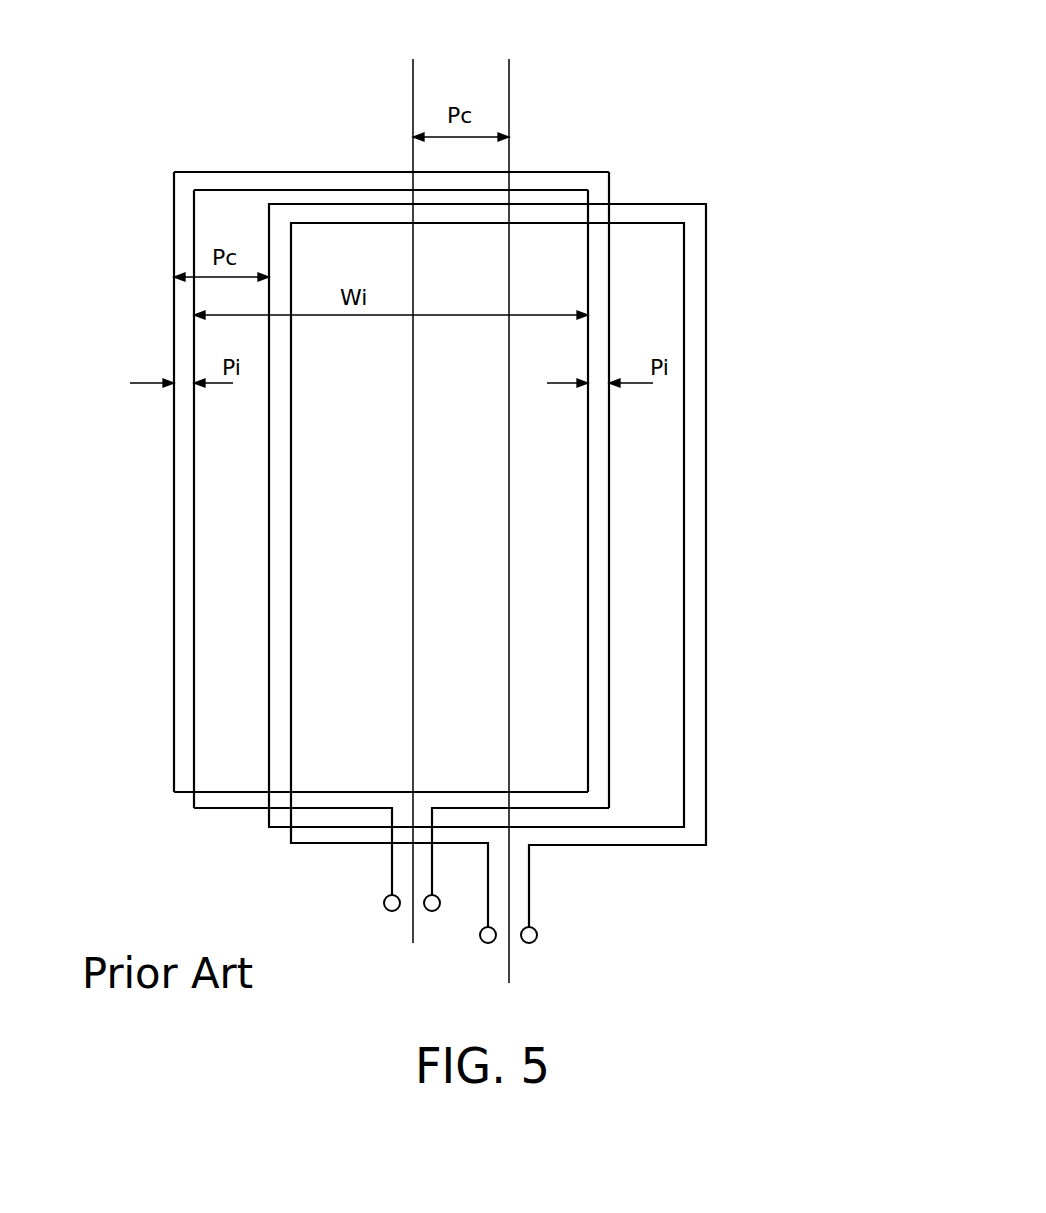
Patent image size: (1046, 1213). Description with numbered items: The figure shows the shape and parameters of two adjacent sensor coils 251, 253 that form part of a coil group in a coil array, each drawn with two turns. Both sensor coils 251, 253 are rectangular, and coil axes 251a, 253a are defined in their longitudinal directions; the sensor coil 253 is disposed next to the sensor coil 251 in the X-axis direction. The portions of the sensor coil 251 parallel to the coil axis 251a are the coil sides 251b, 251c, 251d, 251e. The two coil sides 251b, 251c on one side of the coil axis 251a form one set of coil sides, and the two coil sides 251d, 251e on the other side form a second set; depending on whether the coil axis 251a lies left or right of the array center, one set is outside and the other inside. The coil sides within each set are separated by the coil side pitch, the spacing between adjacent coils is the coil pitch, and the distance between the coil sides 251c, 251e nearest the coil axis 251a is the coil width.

The sensor coil 251 is at (430, 493).
The sensor coil 253 is at (667, 174).
The coil axis 251a is at (413, 67).
The coil axis 253a is at (509, 67).
The coil side 251b is at (177, 542).
The coil side 251c is at (196, 603).
The coil side 251d is at (611, 540).
The coil side 251e is at (590, 637).